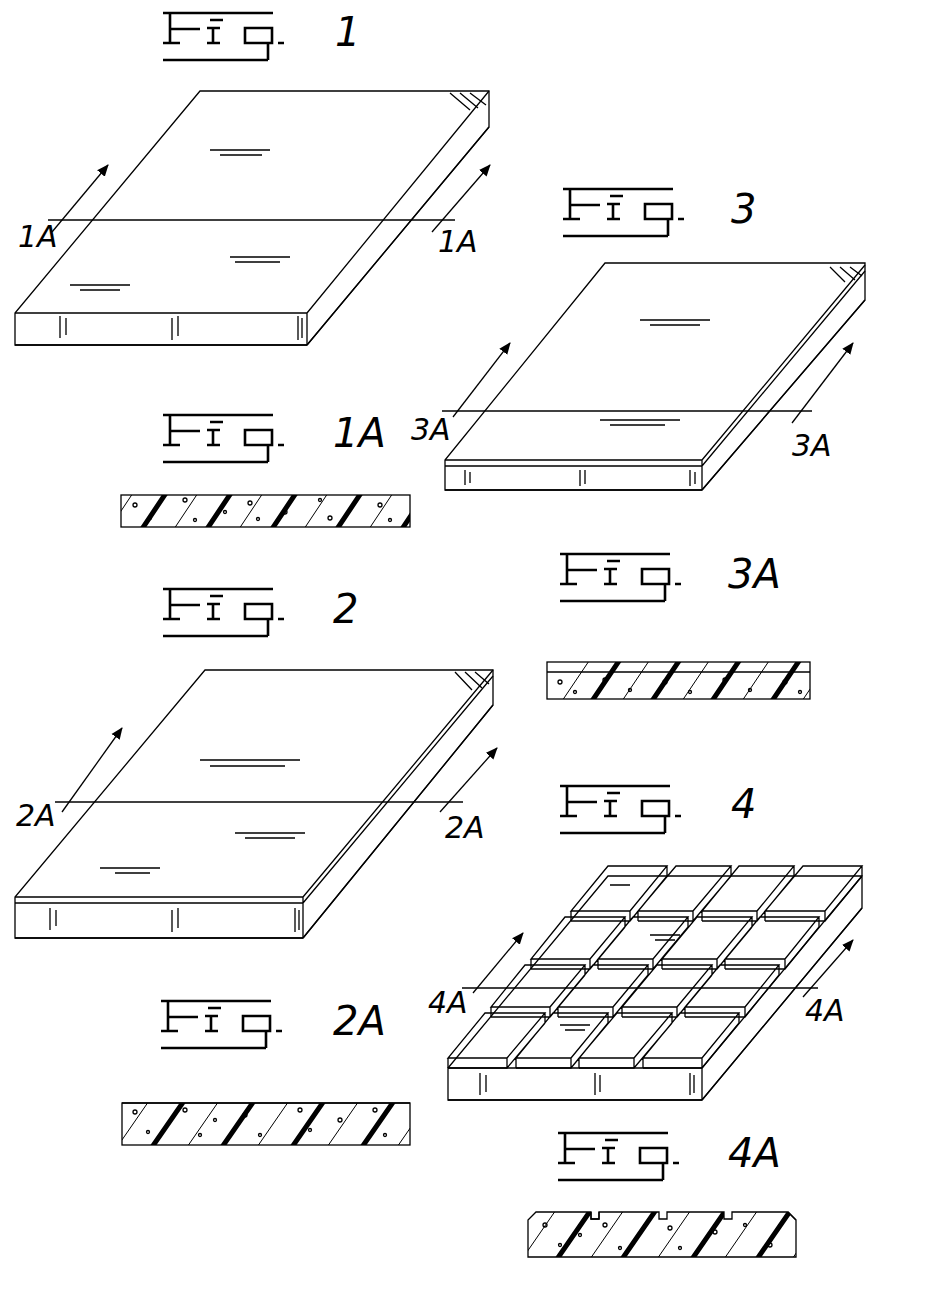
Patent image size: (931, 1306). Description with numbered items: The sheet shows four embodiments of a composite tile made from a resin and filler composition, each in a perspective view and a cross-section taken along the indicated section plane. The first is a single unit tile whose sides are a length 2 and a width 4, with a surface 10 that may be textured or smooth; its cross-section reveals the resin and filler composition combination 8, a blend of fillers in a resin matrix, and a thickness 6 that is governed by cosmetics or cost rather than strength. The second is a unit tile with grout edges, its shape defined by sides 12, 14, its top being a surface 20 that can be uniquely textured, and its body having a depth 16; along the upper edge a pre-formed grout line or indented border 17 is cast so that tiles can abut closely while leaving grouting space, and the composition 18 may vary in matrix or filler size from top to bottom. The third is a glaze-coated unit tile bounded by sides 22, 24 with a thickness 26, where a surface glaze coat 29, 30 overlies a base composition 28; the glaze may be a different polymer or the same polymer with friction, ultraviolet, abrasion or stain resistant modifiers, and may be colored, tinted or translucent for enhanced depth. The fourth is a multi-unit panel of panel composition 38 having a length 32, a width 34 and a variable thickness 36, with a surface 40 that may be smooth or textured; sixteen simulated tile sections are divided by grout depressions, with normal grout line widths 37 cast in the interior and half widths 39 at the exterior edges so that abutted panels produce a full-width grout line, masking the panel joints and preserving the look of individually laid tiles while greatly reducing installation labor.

In FIG. 1, the surface 10 is at (178, 143).
In FIG. 1, the length 2 is at (346, 283).
In FIG. 1, the width 4 is at (98, 330).
In FIG. 1A, the thickness 6 is at (242, 532).
In FIG. 1A, the resin and filler composition combination 8 is at (172, 512).
In FIG. 2, the surface 20 is at (185, 728).
In FIG. 2, the side 12 is at (350, 865).
In FIG. 2, the side 14 is at (100, 918).
In FIG. 2A, the depth 16 is at (233, 1150).
In FIG. 2A, the indented border 17 is at (125, 1108).
In FIG. 2A, the composition 18 is at (250, 1130).
In FIG. 3, the surface glaze coat 30 is at (587, 313).
In FIG. 3, the side 22 is at (727, 450).
In FIG. 3, the side 24 is at (528, 478).
In FIG. 3A, the thickness 26 is at (689, 710).
In FIG. 3A, the base composition 28 is at (648, 690).
In FIG. 3A, the surface glaze coat 29 is at (713, 663).
In FIG. 4, the surface 40 is at (580, 937).
In FIG. 4, the length 32 is at (730, 1047).
In FIG. 4, the width 34 is at (463, 1083).
In FIG. 4A, the thickness 36 is at (657, 1244).
In FIG. 4A, the grout line width 37 is at (595, 1217).
In FIG. 4A, the panel composition 38 is at (592, 1242).
In FIG. 4A, the half width 39 is at (790, 1213).